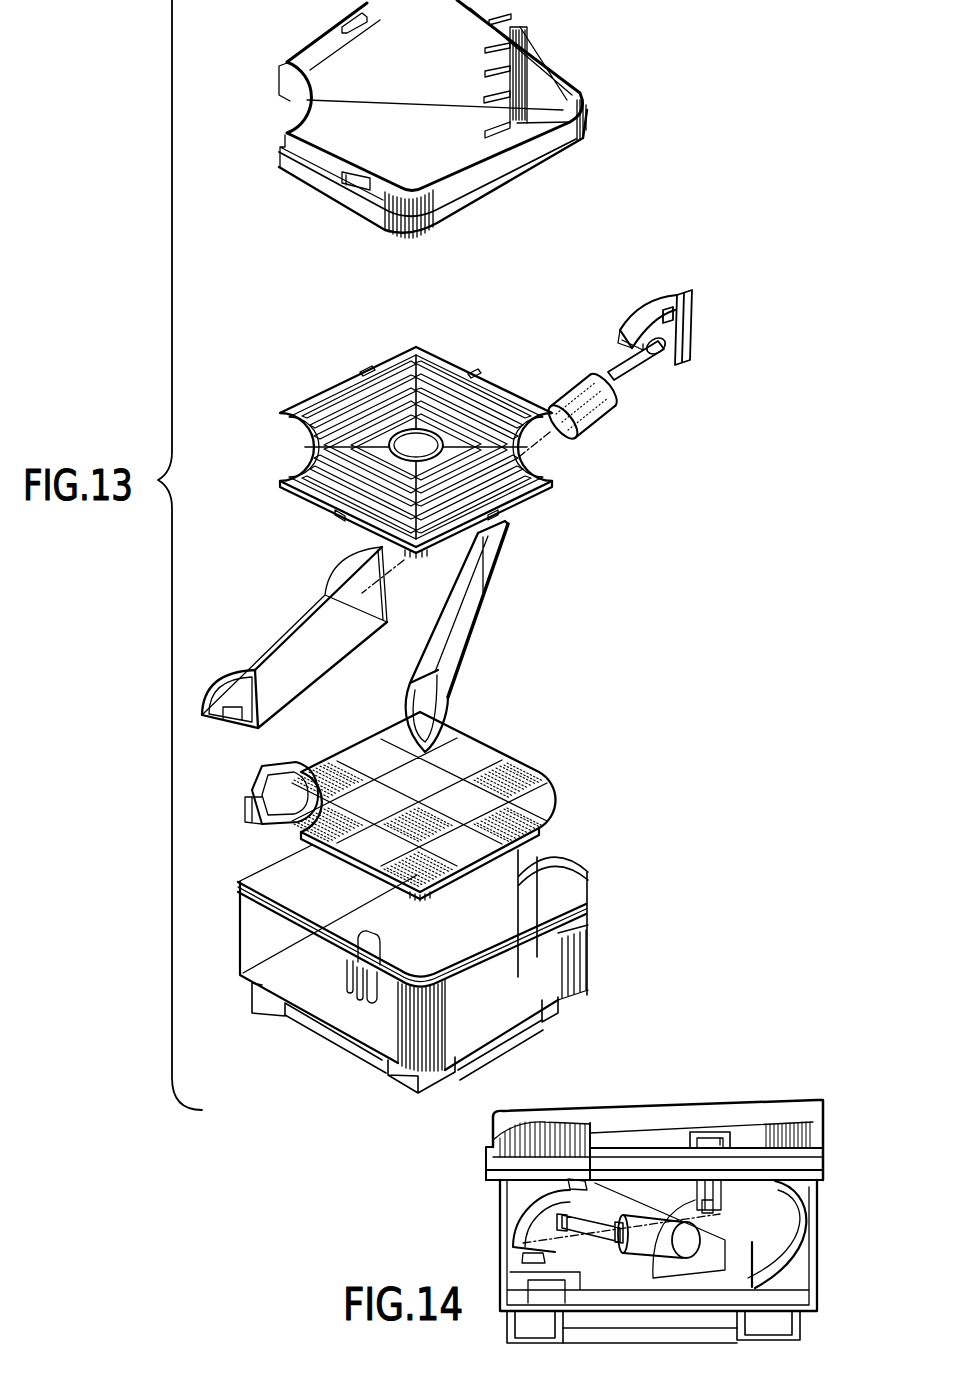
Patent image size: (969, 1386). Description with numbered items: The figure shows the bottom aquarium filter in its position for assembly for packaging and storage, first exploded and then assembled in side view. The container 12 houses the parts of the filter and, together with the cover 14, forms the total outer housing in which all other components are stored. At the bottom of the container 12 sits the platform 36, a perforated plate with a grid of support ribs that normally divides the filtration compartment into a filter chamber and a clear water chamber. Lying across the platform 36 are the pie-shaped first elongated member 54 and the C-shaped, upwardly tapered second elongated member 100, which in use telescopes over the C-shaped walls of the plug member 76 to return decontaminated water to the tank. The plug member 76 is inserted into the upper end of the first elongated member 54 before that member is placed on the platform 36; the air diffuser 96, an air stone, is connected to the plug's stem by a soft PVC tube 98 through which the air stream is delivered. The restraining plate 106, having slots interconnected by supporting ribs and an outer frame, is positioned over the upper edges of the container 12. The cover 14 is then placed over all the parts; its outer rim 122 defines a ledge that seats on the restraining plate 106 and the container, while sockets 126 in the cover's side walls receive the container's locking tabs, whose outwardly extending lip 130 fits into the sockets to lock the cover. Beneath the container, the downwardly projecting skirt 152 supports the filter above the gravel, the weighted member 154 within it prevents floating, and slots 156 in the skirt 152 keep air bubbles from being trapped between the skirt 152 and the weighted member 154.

In FIG. 13, the container 12 is at (606, 906).
In FIG. 14, the container 12 is at (489, 1233).
In FIG. 13, the cover 14 is at (568, 40).
In FIG. 14, the cover 14 is at (678, 1086).
In FIG. 13, the platform 36 is at (530, 743).
In FIG. 13, the first elongated member 54 is at (269, 615).
In FIG. 14, the first elongated member 54 is at (588, 1201).
In FIG. 13, the plug member 76 is at (686, 284).
In FIG. 13, the air diffuser 96 is at (597, 418).
In FIG. 14, the air diffuser 96 is at (713, 1204).
In FIG. 13, the tube 98 is at (640, 372).
In FIG. 14, the tube 98 is at (577, 1230).
In FIG. 13, the second elongated member 100 is at (495, 625).
In FIG. 14, the second elongated member 100 is at (783, 1229).
In FIG. 13, the restraining plate 106 is at (300, 385).
In FIG. 13, the outer rim 122 is at (583, 148).
In FIG. 14, the outer rim 122 is at (826, 1150).
In FIG. 14, the sockets 126 is at (726, 1136).
In FIG. 14, the lip 130 is at (712, 1138).
In FIG. 13, the skirt 152 is at (357, 1053).
In FIG. 14, the skirt 152 is at (805, 1332).
In FIG. 14, the weighted member 154 is at (803, 1313).
In FIG. 13, the slots 156 is at (453, 1074).
In FIG. 14, the slots 156 is at (560, 1323).